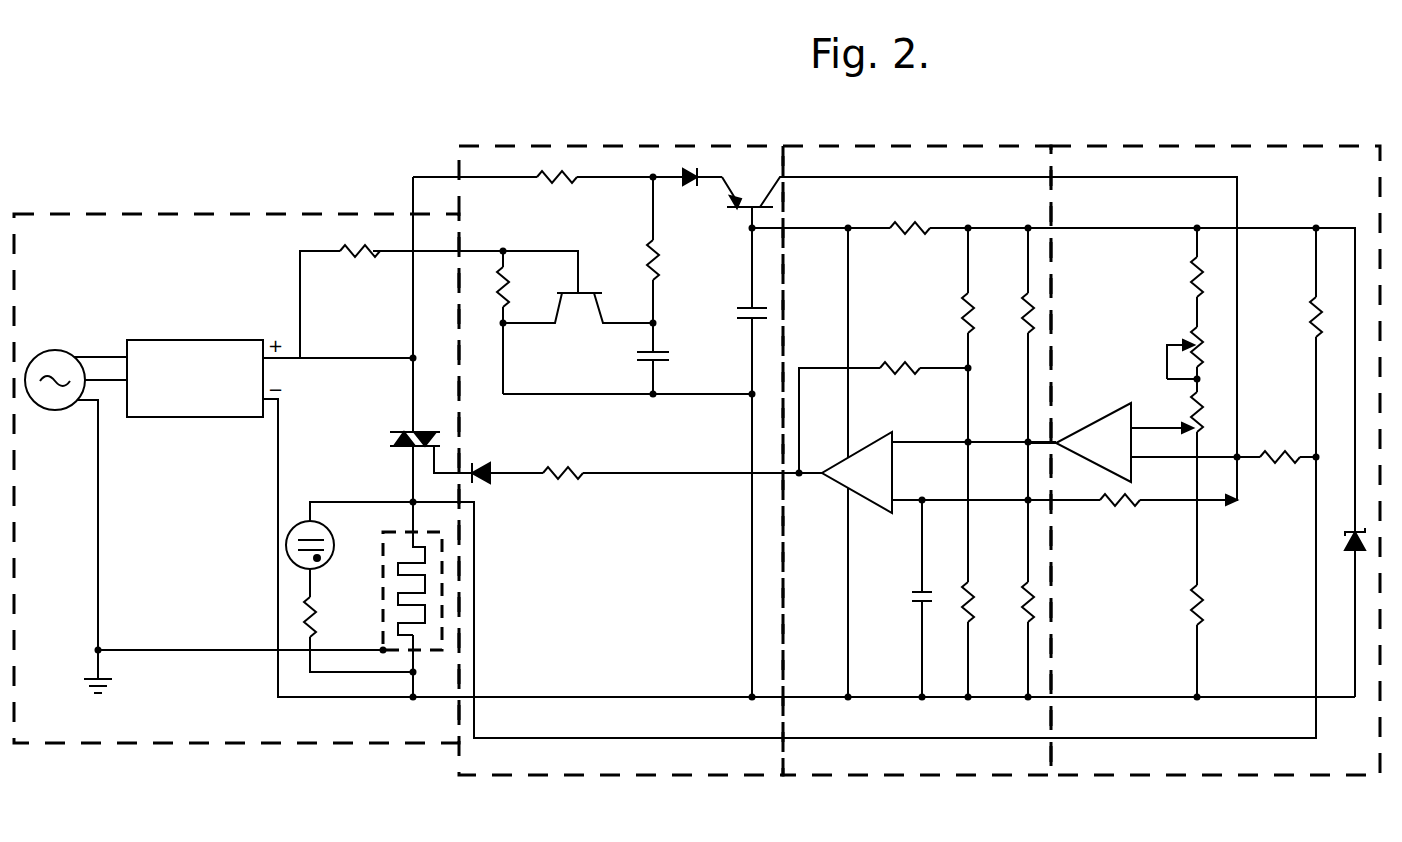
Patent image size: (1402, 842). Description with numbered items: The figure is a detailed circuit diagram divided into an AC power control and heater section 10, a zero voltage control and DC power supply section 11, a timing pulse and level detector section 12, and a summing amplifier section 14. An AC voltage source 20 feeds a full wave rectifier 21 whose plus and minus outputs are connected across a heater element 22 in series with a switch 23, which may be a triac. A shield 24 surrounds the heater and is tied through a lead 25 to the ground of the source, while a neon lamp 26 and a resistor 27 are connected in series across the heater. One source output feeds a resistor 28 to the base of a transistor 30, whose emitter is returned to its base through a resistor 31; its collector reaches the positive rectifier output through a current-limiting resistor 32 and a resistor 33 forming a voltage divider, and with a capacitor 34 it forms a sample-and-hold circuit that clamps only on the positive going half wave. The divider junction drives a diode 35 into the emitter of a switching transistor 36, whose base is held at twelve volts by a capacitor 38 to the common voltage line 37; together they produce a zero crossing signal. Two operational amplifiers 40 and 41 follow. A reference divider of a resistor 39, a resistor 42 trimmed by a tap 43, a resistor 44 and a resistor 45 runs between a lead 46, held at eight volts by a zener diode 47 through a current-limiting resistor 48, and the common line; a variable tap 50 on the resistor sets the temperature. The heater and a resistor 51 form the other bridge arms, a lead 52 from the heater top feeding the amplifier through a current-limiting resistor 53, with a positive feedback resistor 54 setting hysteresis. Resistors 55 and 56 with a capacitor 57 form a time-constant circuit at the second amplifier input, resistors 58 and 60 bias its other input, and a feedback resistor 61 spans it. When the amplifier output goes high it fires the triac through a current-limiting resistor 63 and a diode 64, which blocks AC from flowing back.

The alternating current power control and heater section 10 is at (230, 213).
The zero voltage control and DC power supply section 11 is at (620, 146).
The timing pulse and level detector section 12 is at (930, 146).
The summing amplifier section 14 is at (1152, 146).
The AC voltage source 20 is at (72, 354).
The full wave rectifier 21 is at (128, 342).
The heater element 22 is at (414, 640).
The switch 23 is at (394, 431).
The shield 24 is at (382, 532).
The lead 25 is at (145, 650).
The neon lamp 26 is at (286, 528).
The resistor 27 is at (316, 622).
The resistor 28 is at (376, 251).
The transistor 30 is at (595, 335).
The resistor 31 is at (508, 289).
The current-limiting resistor 32 is at (556, 183).
The resistor 33 is at (646, 256).
The capacitor 34 is at (662, 352).
The diode 35 is at (690, 189).
The switching transistor 36 is at (759, 178).
The common voltage line 37 is at (560, 697).
The capacitor 38 is at (736, 306).
The resistor 39 is at (1192, 274).
The operational amplifier 40 is at (1103, 405).
The operational amplifier 41 is at (838, 433).
The resistor 42 is at (1200, 332).
The tap 43 is at (1172, 344).
The resistor 44 is at (1200, 424).
The resistor 45 is at (1202, 596).
The lead 46 is at (1112, 228).
The zener diode 47 is at (1346, 530).
The current-limiting resistor 48 is at (915, 228).
The variable tap 50 is at (1164, 424).
The resistor 51 is at (1308, 308).
The lead 52 is at (1316, 640).
The current-limiting resistor 53 is at (1266, 456).
The positive feedback resistor 54 is at (1128, 506).
The resistor 55 is at (1026, 300).
The resistor 56 is at (1024, 588).
The capacitor 57 is at (914, 608).
The resistor 58 is at (964, 300).
The resistor 60 is at (975, 606).
The feedback resistor 61 is at (904, 367).
The current-limiting resistor 63 is at (572, 464).
The diode 64 is at (488, 463).